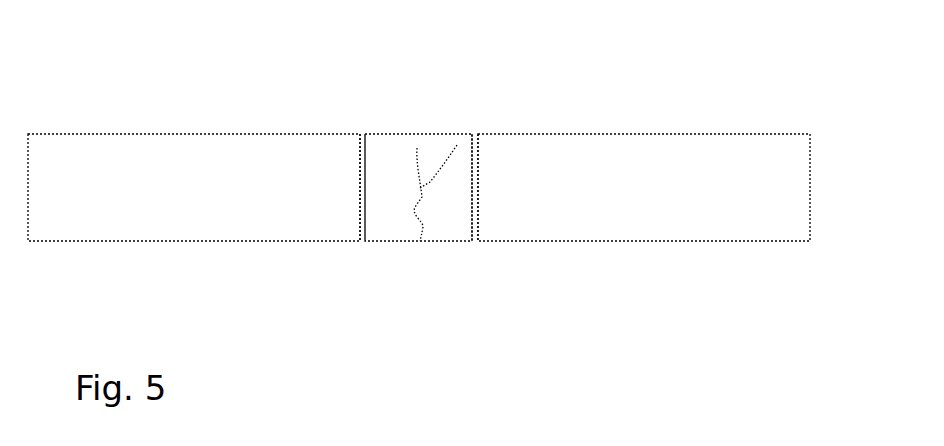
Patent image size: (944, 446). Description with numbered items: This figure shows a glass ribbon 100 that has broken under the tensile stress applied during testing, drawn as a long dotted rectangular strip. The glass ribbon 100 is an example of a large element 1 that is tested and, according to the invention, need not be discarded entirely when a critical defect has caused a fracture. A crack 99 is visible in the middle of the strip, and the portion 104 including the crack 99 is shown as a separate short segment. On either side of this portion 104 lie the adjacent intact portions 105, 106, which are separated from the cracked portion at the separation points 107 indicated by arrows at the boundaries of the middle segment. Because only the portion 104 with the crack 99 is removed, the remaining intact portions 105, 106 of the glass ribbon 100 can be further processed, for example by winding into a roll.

The element 1 is at (419, 190).
The glass ribbon 100 is at (177, 287).
The intact portion 105 is at (205, 133).
The portion including the crack 104 is at (458, 137).
The intact portion 106 is at (648, 133).
The crack 99 is at (420, 200).
The separation points 107 is at (359, 256).